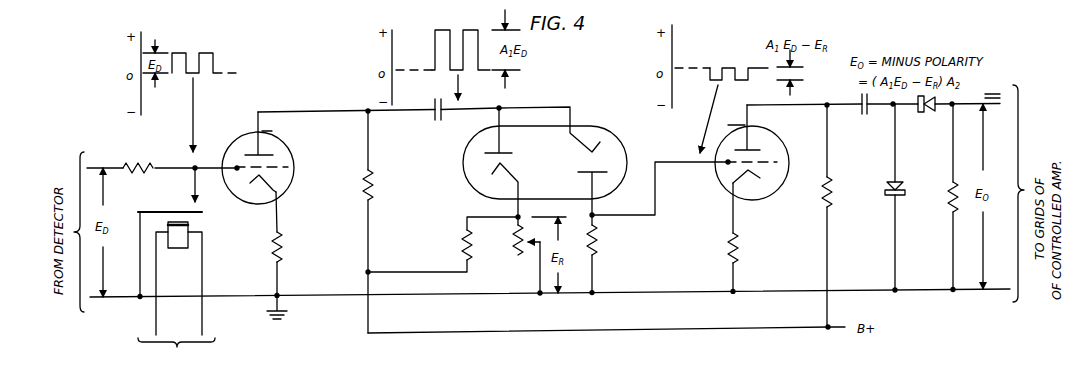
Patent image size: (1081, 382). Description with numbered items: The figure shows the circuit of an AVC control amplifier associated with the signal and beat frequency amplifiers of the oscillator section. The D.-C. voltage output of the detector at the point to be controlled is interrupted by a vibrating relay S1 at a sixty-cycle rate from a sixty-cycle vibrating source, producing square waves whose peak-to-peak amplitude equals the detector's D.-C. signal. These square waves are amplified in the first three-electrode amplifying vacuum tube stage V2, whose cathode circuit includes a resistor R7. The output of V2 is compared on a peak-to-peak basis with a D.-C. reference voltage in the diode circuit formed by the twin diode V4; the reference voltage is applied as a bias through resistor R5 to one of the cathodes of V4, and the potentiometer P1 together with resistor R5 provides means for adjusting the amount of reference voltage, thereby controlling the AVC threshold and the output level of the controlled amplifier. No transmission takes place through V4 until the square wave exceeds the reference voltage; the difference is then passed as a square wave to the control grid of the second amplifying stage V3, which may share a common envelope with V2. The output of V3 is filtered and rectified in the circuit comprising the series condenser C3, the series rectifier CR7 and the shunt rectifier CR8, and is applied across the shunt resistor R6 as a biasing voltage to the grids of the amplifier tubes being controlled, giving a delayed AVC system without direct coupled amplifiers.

The three-electrode amplifying vacuum tube stage V2 is at (231, 149).
The second amplifying stage V3 is at (781, 141).
The twin diode V4 is at (625, 143).
The resistor R5 is at (462, 243).
The shunt resistor R6 is at (944, 194).
The cathode resistor R7 is at (283, 246).
The potentiometer P1 is at (513, 245).
The vibrating relay S1 is at (177, 248).
The series condenser C3 is at (862, 116).
The series rectifier CR7 is at (921, 116).
The shunt rectifier CR8 is at (890, 188).